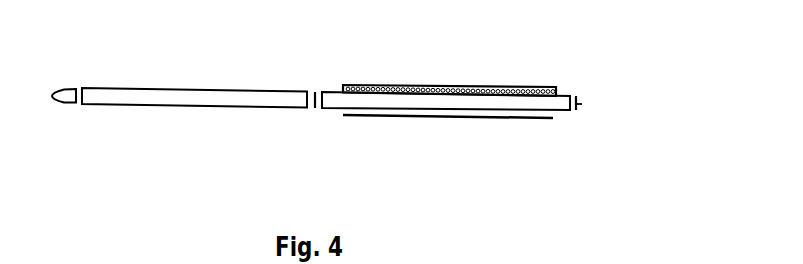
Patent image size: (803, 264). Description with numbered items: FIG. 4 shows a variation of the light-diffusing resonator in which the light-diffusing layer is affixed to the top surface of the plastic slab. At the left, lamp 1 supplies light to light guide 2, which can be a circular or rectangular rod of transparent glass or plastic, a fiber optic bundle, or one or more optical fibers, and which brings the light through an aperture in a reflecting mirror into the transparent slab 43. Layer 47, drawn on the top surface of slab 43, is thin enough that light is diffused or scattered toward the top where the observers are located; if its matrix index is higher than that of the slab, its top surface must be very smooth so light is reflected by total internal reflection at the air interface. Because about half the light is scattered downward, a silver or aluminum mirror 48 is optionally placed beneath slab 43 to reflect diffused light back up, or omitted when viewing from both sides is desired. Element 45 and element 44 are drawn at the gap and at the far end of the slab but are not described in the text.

The lamp 1 is at (65, 105).
The light guide 2 is at (165, 83).
The gap connector pin 45 is at (315, 86).
The slab 43 is at (325, 110).
The light-diffusing layer 47 is at (546, 85).
The mirror 48 is at (416, 117).
The end stop 44 is at (582, 104).